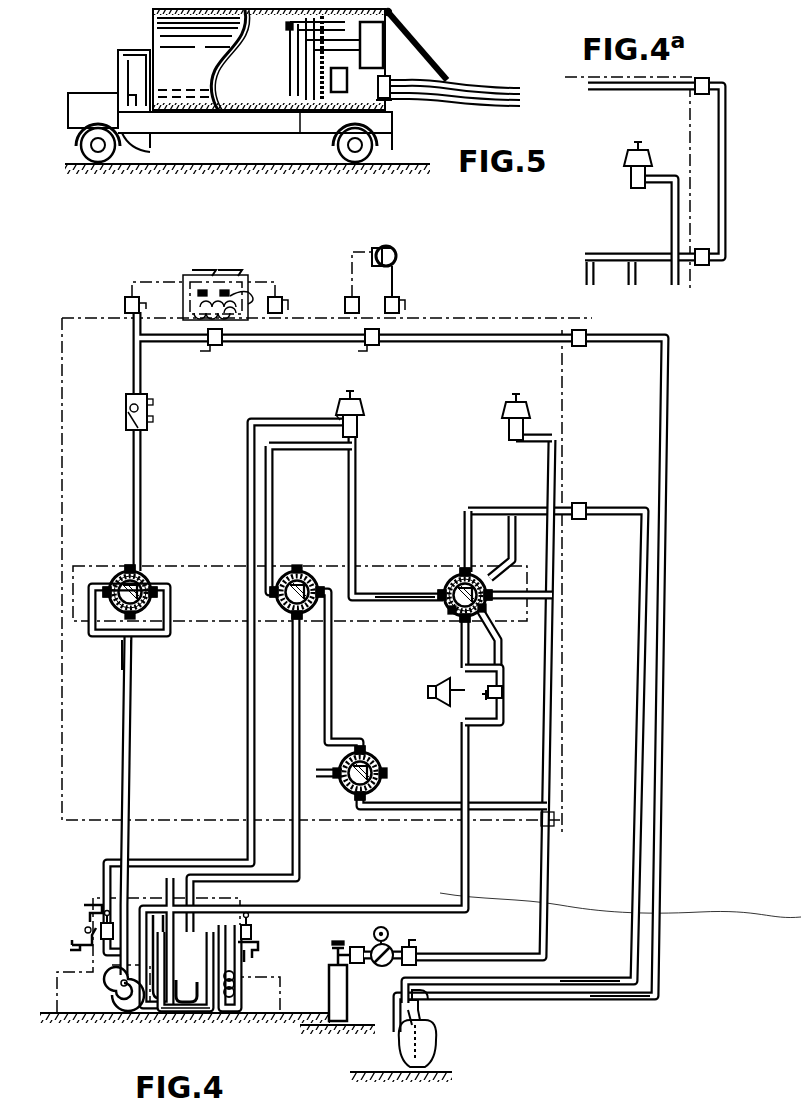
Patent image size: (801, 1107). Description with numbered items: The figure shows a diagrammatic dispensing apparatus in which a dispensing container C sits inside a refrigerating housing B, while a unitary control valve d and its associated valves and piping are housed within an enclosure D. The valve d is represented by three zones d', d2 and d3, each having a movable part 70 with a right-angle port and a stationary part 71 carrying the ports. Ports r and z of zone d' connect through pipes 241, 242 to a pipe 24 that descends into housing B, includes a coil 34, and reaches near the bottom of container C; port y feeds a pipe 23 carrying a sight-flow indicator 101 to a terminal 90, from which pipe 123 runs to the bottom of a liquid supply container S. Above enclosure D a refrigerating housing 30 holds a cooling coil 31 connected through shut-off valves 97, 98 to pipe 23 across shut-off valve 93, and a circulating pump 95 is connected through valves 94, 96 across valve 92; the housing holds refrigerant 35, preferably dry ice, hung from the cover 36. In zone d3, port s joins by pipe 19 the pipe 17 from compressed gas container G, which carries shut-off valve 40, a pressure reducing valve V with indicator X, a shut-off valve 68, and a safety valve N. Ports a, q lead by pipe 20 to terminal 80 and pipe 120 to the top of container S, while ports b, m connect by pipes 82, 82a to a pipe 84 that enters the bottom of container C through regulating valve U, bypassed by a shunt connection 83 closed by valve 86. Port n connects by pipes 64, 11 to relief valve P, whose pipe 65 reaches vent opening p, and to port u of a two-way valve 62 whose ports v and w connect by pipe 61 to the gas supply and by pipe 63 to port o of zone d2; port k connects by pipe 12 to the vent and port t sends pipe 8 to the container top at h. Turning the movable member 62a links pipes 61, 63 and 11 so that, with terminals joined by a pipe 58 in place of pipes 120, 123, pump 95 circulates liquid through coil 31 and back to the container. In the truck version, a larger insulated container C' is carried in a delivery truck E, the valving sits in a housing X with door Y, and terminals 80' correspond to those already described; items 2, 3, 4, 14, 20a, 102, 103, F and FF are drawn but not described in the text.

In FIG. 4, the pump 2 is at (237, 988).
In FIG. 4, the cylinder 3 is at (232, 956).
In FIG. 4, the valve 4 is at (112, 937).
In FIG. 5, the pipe 8 is at (300, 42).
In FIG. 4, the pipe 8 is at (292, 708).
In FIG. 4, the pipe 11 is at (342, 572).
In FIG. 4, the pipe 12 is at (333, 444).
In FIG. 4, the conduit 14 is at (360, 446).
In FIG. 5, the pipe 17 is at (320, 60).
In FIG. 4, the pipe 17 is at (548, 816).
In FIG. 4, the pipe 19 is at (548, 596).
In FIG. 4A, the pipe 20 is at (652, 250).
In FIG. 4, the pipe 20 is at (498, 508).
In FIG. 4, the branch conduit 20a is at (518, 522).
In FIG. 4A, the pipe 23 is at (650, 92).
In FIG. 4, the pipe 23 is at (505, 341).
In FIG. 5, the pipe 24 is at (287, 26).
In FIG. 4, the pipe 24 is at (128, 762).
In FIG. 4, the refrigerating housing 30 is at (182, 268).
In FIG. 4, the cooling coil 31 is at (250, 274).
In FIG. 4, the coil 34 is at (108, 985).
In FIG. 4, the refrigerant 35 is at (226, 252).
In FIG. 4, the housing cover 36 is at (216, 245).
In FIG. 4, the shut-off valve 40 is at (340, 945).
In FIG. 4A, the pipe 58 is at (727, 160).
In FIG. 4, the pipe 61 is at (530, 808).
In FIG. 4, the two-way valve 62 is at (350, 792).
In FIG. 4, the movable valve member 62a is at (380, 765).
In FIG. 4, the pipe 63 is at (340, 685).
In FIG. 4, the pipe 64 is at (375, 610).
In FIG. 4, the pipe 65 is at (335, 415).
In FIG. 4, the shut-off valve 68 is at (414, 948).
In FIG. 4, the movable part 70 is at (172, 580).
In FIG. 4, the stationary part 71 is at (178, 570).
In FIG. 4A, the terminal 80 is at (724, 245).
In FIG. 4, the terminal 80 is at (525, 742).
In FIG. 5, the terminal 80' is at (398, 115).
In FIG. 4, the pipe 82 is at (462, 640).
In FIG. 4, the pipe 82a is at (500, 650).
In FIG. 4, the shunt connection 83 is at (492, 727).
In FIG. 5, the pipe 84 is at (330, 80).
In FIG. 4, the pipe 84 is at (460, 800).
In FIG. 4, the shut-off valve 86 is at (503, 693).
In FIG. 5, the terminal 90 is at (388, 78).
In FIG. 4A, the terminal 90 is at (692, 96).
In FIG. 4, the terminal 90 is at (579, 346).
In FIG. 4, the shut-off valve 92 is at (385, 357).
In FIG. 4, the shut-off valve 93 is at (216, 346).
In FIG. 4, the shut-off valve 94 is at (402, 298).
In FIG. 4, the liquid circulating pump 95 is at (396, 256).
In FIG. 4, the shut-off valve 96 is at (346, 298).
In FIG. 4, the shut-off valve 97 is at (282, 298).
In FIG. 4, the shut-off valve 98 is at (132, 288).
In FIG. 4, the sight-flow indicator 101 is at (126, 410).
In FIG. 4, the terminal 102 is at (148, 402).
In FIG. 4, the terminal 103 is at (148, 417).
In FIG. 5, the pipe 120 is at (462, 100).
In FIG. 4, the pipe 120 is at (558, 990).
In FIG. 5, the pipe 123 is at (497, 100).
In FIG. 4, the pipe 123 is at (592, 994).
In FIG. 4, the pipe 241 is at (124, 636).
In FIG. 4, the pipe 242 is at (132, 636).
In FIG. 4, the pressure relief valve P is at (362, 418).
In FIG. 4A, the safety valve N is at (649, 213).
In FIG. 4, the safety valve N is at (502, 428).
In FIG. 4, the pressure reducing and regulating valve U is at (428, 694).
In FIG. 4, the liquid supply container S is at (398, 1058).
In FIG. 5, the compressed gas container G is at (339, 80).
In FIG. 4, the compressed gas container G is at (339, 984).
In FIG. 4, the pressure reducing and regulating valve V is at (380, 966).
In FIG. 5, the housing X is at (322, 118).
In FIG. 4, the housing X is at (388, 934).
In FIG. 5, the enclosure D is at (371, 45).
In FIG. 4, the enclosure D is at (78, 815).
In FIG. 5, the delivery truck E is at (100, 92).
In FIG. 5, the door Y is at (428, 40).
In FIG. 4, the dispensing container C is at (176, 1032).
In FIG. 5, the heat insulated storage container C' is at (136, 29).
In FIG. 4, the refrigerating housing B is at (66, 970).
In FIG. 4, the valve F is at (260, 948).
In FIG. 4, the valve FF is at (80, 942).
In FIG. 4, the unitary control valve d is at (287, 612).
In FIG. 4, the valve zone d' is at (123, 589).
In FIG. 4, the valve zone d2 is at (285, 575).
In FIG. 4, the valve zone d3 is at (442, 582).
In FIG. 4, the opening h is at (185, 970).
In FIG. 4, the vent opening p is at (85, 912).
In FIG. 4, the port y is at (124, 572).
In FIG. 4, the port r is at (108, 582).
In FIG. 4, the port z is at (152, 588).
In FIG. 4, the port k is at (276, 615).
In FIG. 4, the port t is at (290, 616).
In FIG. 4, the port o is at (314, 616).
In FIG. 4, the port q is at (474, 574).
In FIG. 4, the port a is at (490, 584).
In FIG. 4, the port n is at (444, 606).
In FIG. 4, the port s is at (492, 608).
In FIG. 4, the port m is at (456, 622).
In FIG. 4, the port b is at (474, 622).
In FIG. 4, the port u is at (362, 752).
In FIG. 4, the port v is at (378, 792).
In FIG. 4, the port w is at (321, 775).